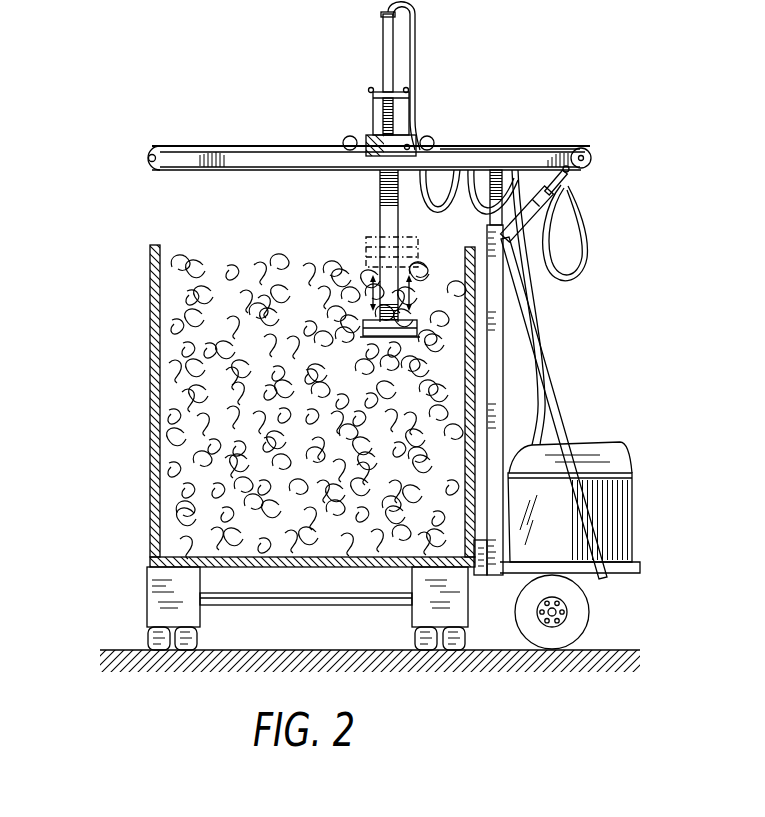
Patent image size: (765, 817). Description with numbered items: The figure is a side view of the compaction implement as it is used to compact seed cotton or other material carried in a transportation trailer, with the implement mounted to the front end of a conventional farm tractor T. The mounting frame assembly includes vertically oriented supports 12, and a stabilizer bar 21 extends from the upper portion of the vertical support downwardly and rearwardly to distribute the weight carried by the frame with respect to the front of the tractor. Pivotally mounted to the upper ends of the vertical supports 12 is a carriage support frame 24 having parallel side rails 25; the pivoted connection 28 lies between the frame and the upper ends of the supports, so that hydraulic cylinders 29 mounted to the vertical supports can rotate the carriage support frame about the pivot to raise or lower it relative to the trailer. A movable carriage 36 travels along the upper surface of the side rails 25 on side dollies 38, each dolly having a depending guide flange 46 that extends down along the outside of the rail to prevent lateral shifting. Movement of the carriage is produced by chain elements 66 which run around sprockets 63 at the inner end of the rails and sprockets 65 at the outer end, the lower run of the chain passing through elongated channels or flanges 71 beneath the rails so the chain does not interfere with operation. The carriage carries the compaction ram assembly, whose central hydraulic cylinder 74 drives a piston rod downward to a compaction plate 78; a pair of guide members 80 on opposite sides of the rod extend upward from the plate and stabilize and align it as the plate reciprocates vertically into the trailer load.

The vertical supports 12 is at (494, 342).
The stabilizer bars 21 is at (552, 397).
The carriage support frame 24 is at (268, 140).
The side rails 25 is at (244, 160).
The pivoted connection 28 is at (545, 153).
The hydraulic cylinders 29 is at (568, 210).
The movable carriage 36 is at (354, 73).
The side dollies 38 is at (373, 132).
The depending guide flange 46 is at (400, 147).
The sprockets 63 is at (591, 156).
The sprockets 65 is at (150, 157).
The chain elements 66 is at (494, 148).
The elongated channels or flanges 71 is at (217, 170).
The central hydraulic cylinder 74 is at (394, 40).
The compaction plate 78 is at (364, 320).
The guide members 80 is at (382, 208).
The farm tractor T is at (615, 440).